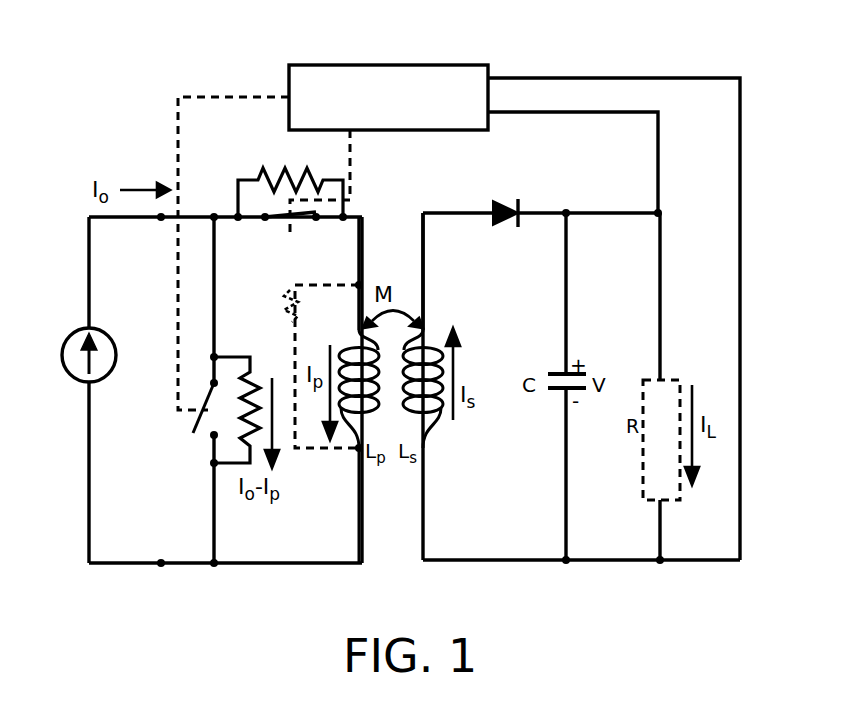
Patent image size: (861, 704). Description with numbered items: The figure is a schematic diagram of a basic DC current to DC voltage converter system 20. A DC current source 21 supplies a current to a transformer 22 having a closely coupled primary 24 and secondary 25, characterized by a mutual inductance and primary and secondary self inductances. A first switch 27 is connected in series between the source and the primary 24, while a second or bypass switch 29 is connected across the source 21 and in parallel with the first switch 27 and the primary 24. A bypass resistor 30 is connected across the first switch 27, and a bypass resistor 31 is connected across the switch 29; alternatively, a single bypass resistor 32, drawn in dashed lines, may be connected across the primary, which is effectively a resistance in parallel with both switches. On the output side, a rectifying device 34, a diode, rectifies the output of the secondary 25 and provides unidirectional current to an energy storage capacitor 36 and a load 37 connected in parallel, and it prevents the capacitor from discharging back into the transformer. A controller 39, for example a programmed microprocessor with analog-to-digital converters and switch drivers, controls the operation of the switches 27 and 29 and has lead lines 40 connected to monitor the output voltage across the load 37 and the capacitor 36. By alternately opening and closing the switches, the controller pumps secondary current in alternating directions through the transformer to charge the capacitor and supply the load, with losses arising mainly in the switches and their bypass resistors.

The converter system 20 is at (291, 575).
The DC current source 21 is at (62, 353).
The transformer 22 is at (428, 328).
The primary 24 is at (356, 440).
The secondary 25 is at (428, 422).
The first switch 27 is at (290, 220).
The second or bypass switch 29 is at (192, 438).
The bypass resistor 30 is at (262, 178).
The bypass resistor 31 is at (266, 386).
The single bypass resistor 32 is at (290, 313).
The rectifying device 34 is at (497, 205).
The energy storage capacitor 36 is at (560, 372).
The load 37 is at (668, 378).
The controller 39 is at (457, 62).
The lead lines 40 is at (738, 190).